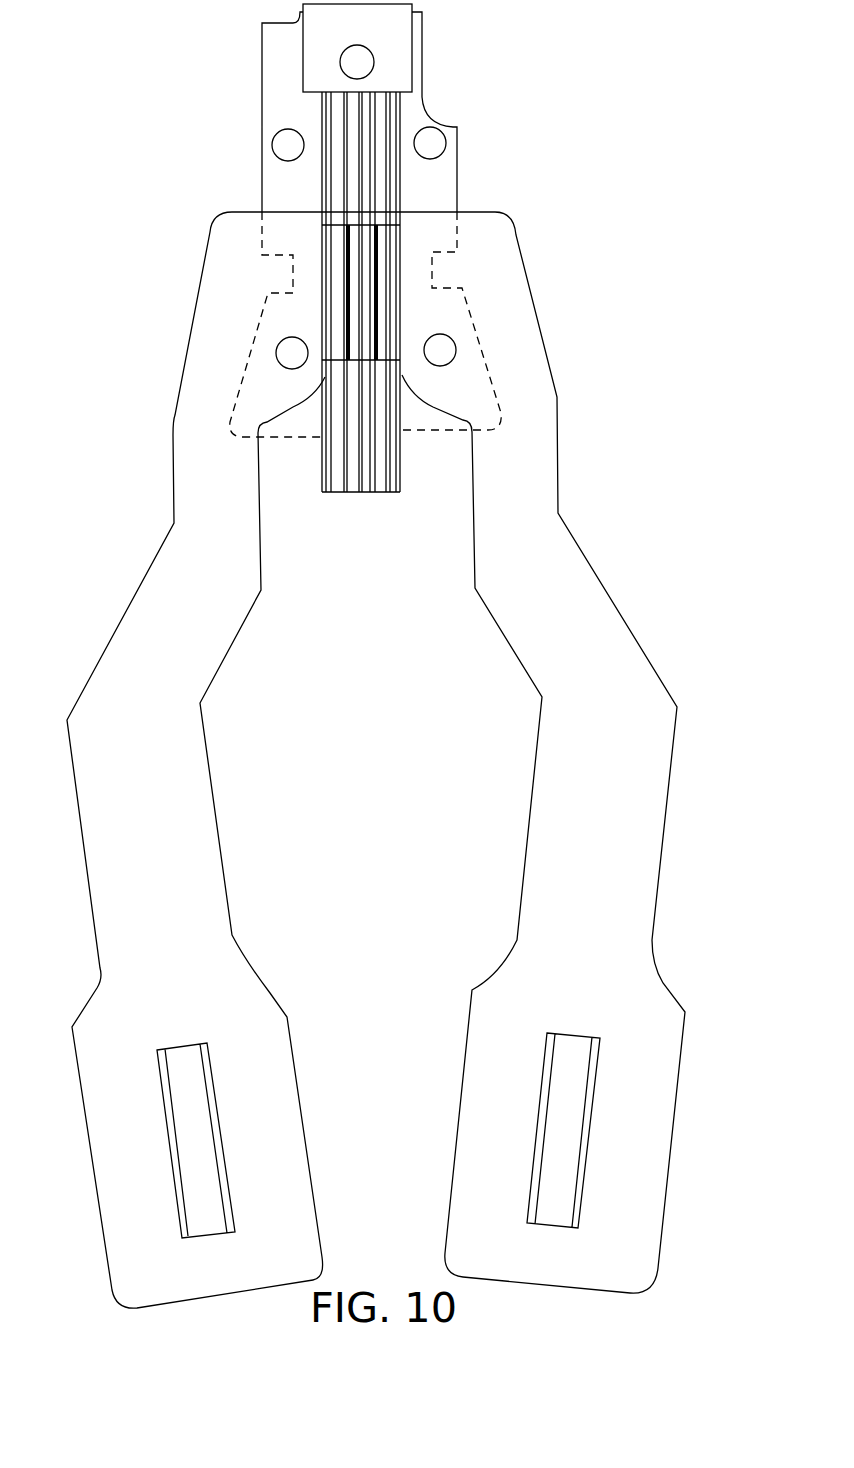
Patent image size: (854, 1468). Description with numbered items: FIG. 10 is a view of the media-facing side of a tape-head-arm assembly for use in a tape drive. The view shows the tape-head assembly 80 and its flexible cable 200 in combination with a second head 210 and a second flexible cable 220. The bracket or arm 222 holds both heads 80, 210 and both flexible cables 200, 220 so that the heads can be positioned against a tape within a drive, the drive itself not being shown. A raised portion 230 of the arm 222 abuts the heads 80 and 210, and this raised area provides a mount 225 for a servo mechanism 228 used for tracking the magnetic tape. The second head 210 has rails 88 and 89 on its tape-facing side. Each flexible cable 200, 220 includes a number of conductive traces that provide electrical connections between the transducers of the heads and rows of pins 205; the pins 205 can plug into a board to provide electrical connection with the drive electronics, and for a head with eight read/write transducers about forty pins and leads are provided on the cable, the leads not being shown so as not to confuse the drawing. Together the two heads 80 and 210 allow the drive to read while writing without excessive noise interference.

The flexible cable 200 is at (119, 619).
The flexible cable 220 is at (615, 607).
The pins 205 is at (212, 1105).
The arm 222 is at (277, 100).
The raised portion 230 is at (412, 48).
The mount 225 is at (340, 56).
The servo mechanism 228 is at (447, 143).
The tape-head assembly 80 is at (323, 203).
The rail 88 is at (383, 492).
The rail 89 is at (395, 492).
The head 210 is at (400, 205).